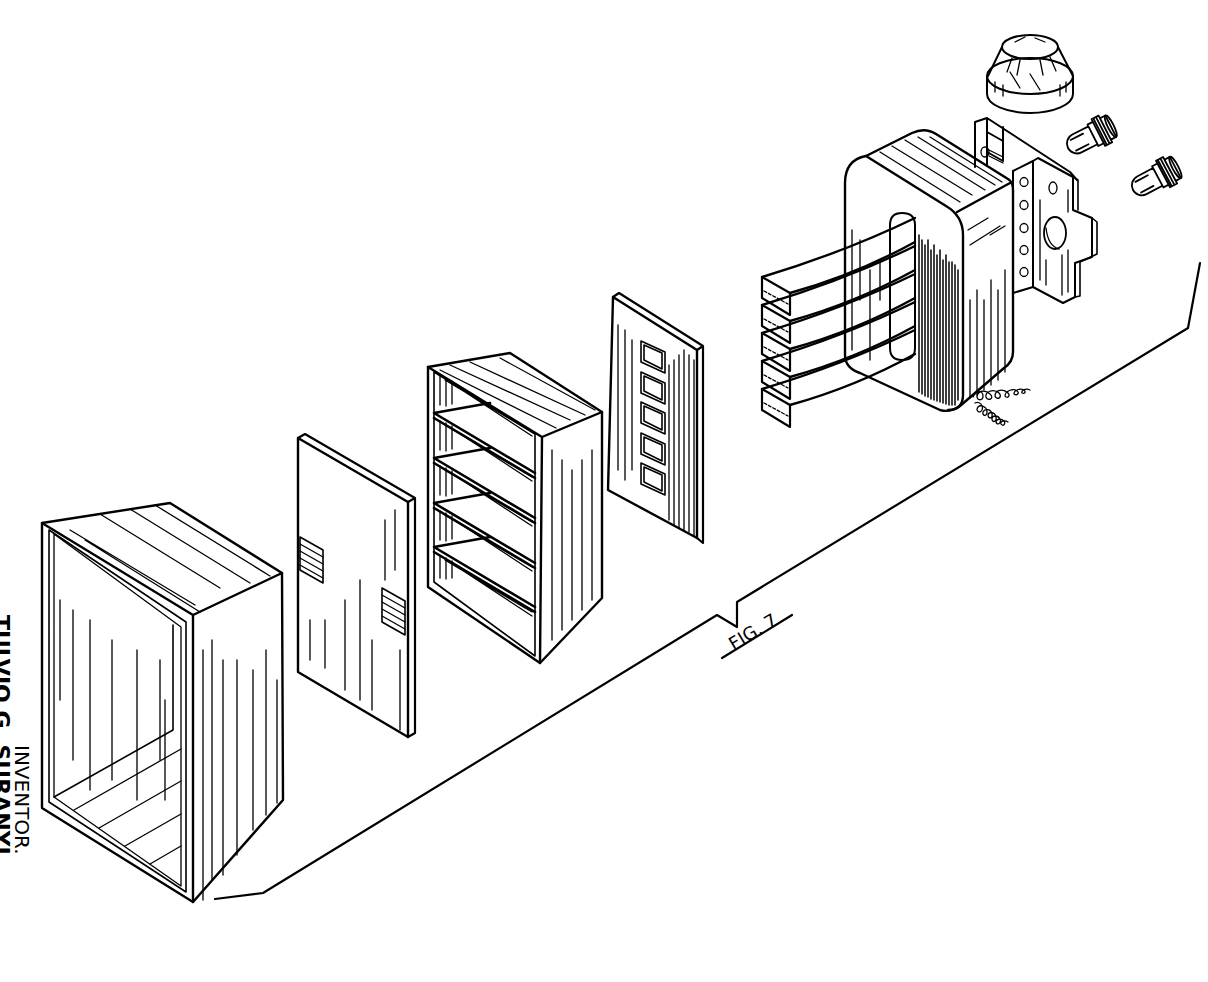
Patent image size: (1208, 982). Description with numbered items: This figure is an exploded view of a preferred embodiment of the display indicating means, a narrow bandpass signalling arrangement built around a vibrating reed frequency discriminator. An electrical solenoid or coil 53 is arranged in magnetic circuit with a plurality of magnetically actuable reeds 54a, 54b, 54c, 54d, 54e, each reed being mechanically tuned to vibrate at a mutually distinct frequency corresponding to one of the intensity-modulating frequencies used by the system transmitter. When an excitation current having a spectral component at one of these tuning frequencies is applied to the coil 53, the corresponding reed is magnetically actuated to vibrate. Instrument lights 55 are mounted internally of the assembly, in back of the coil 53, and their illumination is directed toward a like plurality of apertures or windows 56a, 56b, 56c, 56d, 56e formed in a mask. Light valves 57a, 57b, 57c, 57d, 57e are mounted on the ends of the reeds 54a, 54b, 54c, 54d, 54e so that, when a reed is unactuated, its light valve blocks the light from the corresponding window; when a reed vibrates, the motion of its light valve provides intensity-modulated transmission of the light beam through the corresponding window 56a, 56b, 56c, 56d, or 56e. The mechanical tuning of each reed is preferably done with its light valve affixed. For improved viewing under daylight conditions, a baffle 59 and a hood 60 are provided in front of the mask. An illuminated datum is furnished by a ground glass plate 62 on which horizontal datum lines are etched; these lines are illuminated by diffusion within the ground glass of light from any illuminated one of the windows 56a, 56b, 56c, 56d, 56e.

The coil 53 is at (1014, 245).
The magnetically actuable reed 54a is at (838, 255).
The magnetically actuable reed 54b is at (838, 283).
The magnetically actuable reed 54c is at (838, 311).
The magnetically actuable reed 54d is at (838, 339).
The magnetically actuable reed 54e is at (838, 367).
The instrument lights 55 is at (1181, 153).
The window 56a is at (665, 364).
The window 56b is at (665, 395).
The window 56c is at (665, 425).
The window 56d is at (665, 455).
The window 56e is at (665, 485).
The light valve 57a is at (762, 288).
The light valve 57b is at (762, 318).
The light valve 57c is at (762, 347).
The light valve 57d is at (762, 375).
The light valve 57e is at (762, 401).
The baffle 59 is at (565, 572).
The hood 60 is at (247, 805).
The ground glass plate 62 is at (373, 685).